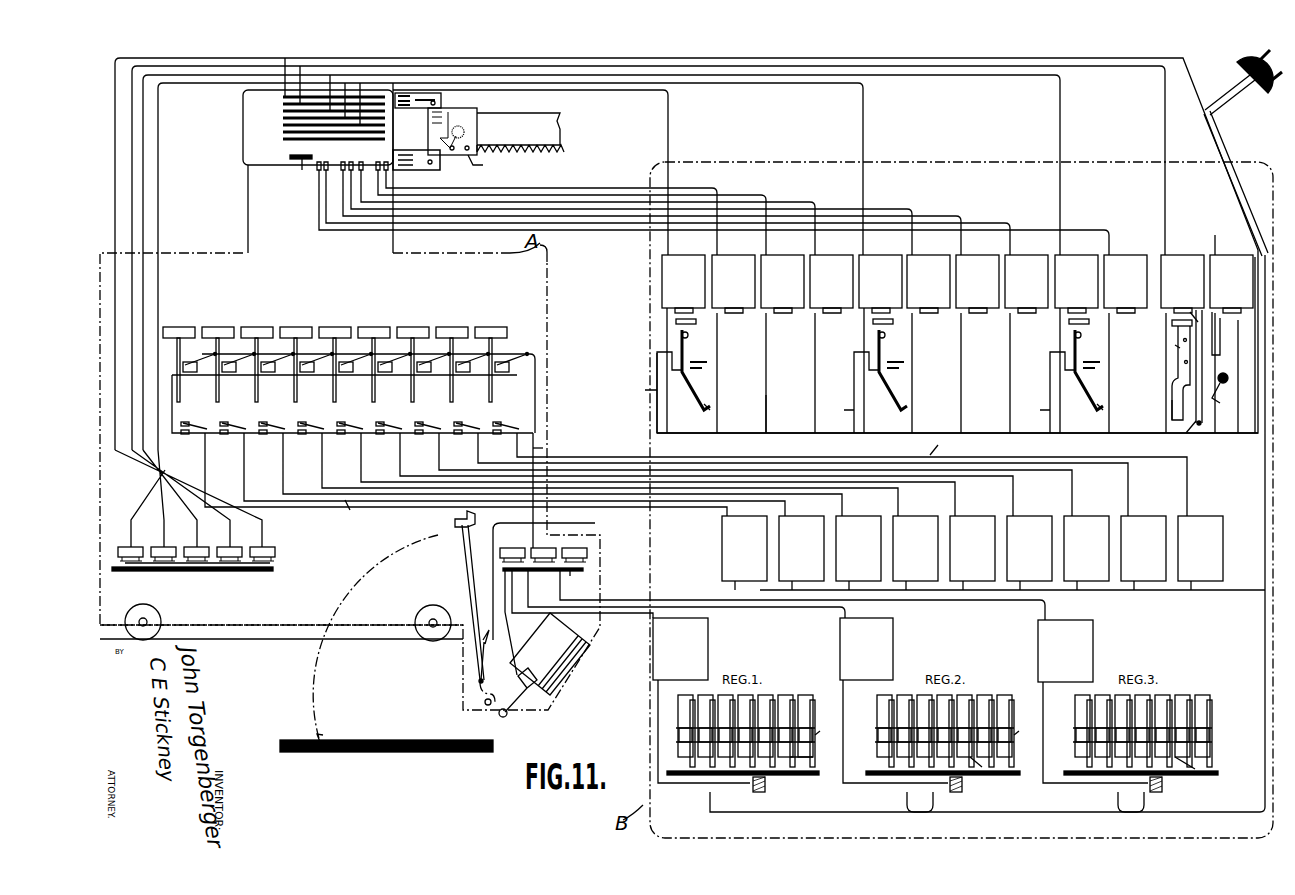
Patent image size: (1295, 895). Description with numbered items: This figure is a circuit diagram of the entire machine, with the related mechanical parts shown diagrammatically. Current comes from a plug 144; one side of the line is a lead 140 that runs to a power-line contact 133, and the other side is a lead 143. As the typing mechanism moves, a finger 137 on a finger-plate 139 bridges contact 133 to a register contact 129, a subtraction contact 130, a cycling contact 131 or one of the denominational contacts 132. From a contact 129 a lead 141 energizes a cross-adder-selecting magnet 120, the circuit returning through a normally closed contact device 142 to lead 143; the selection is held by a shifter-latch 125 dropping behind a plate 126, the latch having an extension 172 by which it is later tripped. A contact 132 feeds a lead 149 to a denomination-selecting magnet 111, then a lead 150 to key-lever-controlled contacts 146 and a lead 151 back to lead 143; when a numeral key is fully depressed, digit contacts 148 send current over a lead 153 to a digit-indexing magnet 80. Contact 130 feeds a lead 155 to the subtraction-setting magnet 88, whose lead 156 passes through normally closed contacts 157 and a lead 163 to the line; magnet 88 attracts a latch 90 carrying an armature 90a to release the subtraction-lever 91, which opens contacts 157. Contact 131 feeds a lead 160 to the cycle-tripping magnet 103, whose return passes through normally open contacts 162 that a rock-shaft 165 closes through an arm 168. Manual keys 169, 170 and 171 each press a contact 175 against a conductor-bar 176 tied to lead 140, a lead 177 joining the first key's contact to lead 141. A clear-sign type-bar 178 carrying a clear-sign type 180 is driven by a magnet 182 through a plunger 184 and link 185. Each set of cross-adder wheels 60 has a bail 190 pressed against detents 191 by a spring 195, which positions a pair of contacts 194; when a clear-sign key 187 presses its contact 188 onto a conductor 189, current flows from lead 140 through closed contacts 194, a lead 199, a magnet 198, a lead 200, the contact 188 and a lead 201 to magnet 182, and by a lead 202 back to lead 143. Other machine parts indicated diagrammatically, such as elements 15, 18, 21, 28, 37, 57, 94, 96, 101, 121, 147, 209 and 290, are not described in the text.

The type bar rack 15 is at (370, 740).
The machine frame line 18 is at (277, 640).
The platen roller 21 is at (417, 615).
The digit keys 28 is at (240, 327).
The pawl 37 is at (480, 646).
The rack 57 is at (520, 132).
The cross-adder wheels 60 is at (793, 694).
The digit-indexing magnet 80 is at (1185, 580).
The subtraction-setting magnet 88 is at (1182, 344).
The latch 90 is at (1178, 376).
The armature 90a is at (1167, 320).
The subtraction-lever 91 is at (1170, 399).
The contact 94 is at (1173, 349).
The contact block 96 is at (463, 164).
The link rod 101 is at (1199, 400).
The cycle-tripping magnet 103 is at (1228, 252).
The denomination-selecting magnet 111 is at (762, 253).
The cross-adder-selecting magnet 120 is at (662, 258).
The roller 121 is at (159, 614).
The shifter-latch 125 is at (887, 361).
The plate 126 is at (904, 381).
The contact 129 is at (364, 107).
The subtraction-contact 130 is at (392, 92).
The cycling contact 131 is at (293, 170).
The denominational contact 132 is at (326, 174).
The power-line contact 133 is at (312, 78).
The finger 137 is at (435, 97).
The finger-plate 139 is at (442, 114).
The power-line lead 140 is at (1141, 63).
The lead 141 is at (601, 90).
The normally closed contact device 142 is at (657, 390).
The lead 143 is at (772, 436).
The plug 144 is at (1250, 98).
The key-lever-controlled contacts 146 is at (315, 370).
The key contact rail 147 is at (459, 374).
The digit contacts 148 is at (357, 438).
The lead 149 is at (363, 224).
The lead 150 is at (768, 395).
The lead 151 is at (172, 406).
The lead 153 is at (655, 482).
The lead 155 is at (1165, 145).
The lead 156 is at (1194, 301).
The normally closed contacts 157 is at (1181, 438).
The lead 160 is at (1202, 171).
The normally open contacts 162 is at (1232, 333).
The lead 163 is at (1238, 433).
The rock-shaft 165 is at (1231, 396).
The arm 168 is at (1228, 378).
The key 169 is at (135, 547).
The key 170 is at (198, 547).
The key 171 is at (270, 542).
The extension 172 is at (710, 408).
The contact 175 is at (135, 570).
The conductor-bar 176 is at (208, 570).
The lead 177 is at (144, 212).
The clear-sign type-bar 178 is at (465, 578).
The clear-sign type 180 is at (455, 522).
The clear-sign magnet 182 is at (584, 660).
The plunger 184 is at (536, 670).
The link 185 is at (514, 706).
The clear-sign key 187 is at (545, 549).
The contact 188 is at (535, 572).
The conductor 189 is at (570, 572).
The bail 190 is at (693, 775).
The detents 191 is at (1016, 768).
The contacts 194 is at (750, 787).
The spring 195 is at (925, 812).
The magnet 198 is at (873, 650).
The lead 199 is at (880, 784).
The lead 200 is at (612, 614).
The lead 201 is at (505, 612).
The lead 202 is at (559, 445).
The register indicator 209 is at (1024, 720).
The register indicator 290 is at (833, 720).